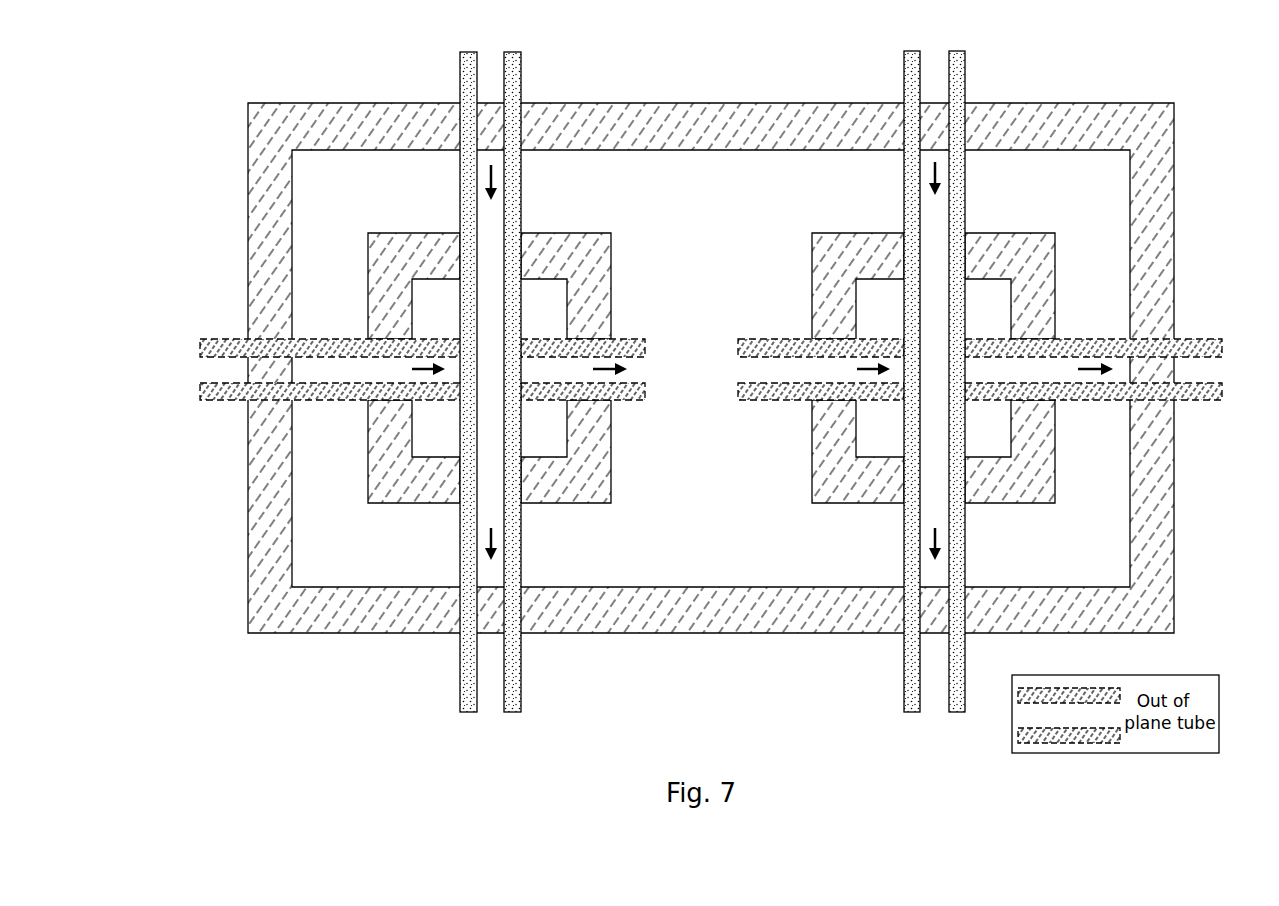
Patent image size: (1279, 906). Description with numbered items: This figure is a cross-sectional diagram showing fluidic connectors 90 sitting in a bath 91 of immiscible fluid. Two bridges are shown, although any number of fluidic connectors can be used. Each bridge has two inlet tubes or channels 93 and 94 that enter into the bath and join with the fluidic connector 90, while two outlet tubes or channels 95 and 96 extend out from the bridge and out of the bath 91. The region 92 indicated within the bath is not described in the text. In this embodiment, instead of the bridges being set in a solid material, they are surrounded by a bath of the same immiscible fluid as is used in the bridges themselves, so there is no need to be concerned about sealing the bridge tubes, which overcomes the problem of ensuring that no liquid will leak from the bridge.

The fluidic connector 90 is at (393, 228).
The bath 91 is at (240, 154).
The chamber / flow region 92 is at (642, 540).
The inlet tube or channel 93 is at (785, 338).
The inlet tube or channel 94 is at (520, 70).
The outlet tube or channel 95 is at (629, 338).
The outlet tube or channel 96 is at (463, 668).